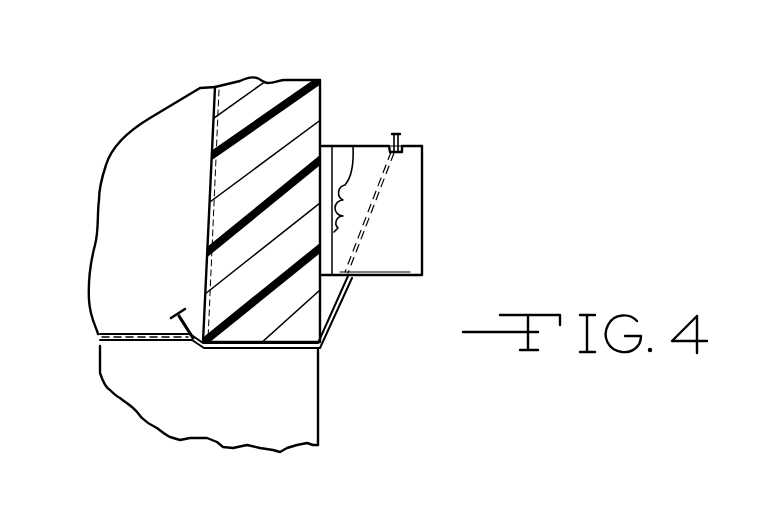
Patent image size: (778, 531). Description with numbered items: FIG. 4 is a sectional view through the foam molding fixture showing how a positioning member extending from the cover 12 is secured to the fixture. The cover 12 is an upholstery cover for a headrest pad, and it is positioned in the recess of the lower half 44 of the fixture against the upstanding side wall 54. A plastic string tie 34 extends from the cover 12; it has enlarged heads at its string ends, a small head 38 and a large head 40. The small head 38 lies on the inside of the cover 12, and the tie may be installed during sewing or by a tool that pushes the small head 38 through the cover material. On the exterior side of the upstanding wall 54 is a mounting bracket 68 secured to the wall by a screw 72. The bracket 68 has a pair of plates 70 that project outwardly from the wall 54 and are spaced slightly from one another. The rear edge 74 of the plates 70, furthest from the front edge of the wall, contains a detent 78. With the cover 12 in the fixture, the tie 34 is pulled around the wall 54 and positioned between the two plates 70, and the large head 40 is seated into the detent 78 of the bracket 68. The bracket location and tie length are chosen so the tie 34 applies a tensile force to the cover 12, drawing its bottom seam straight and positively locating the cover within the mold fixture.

The cover 12 is at (204, 128).
The upstanding side wall 54 is at (272, 97).
The mounting bracket 68 is at (436, 233).
The plate 70 is at (400, 262).
The screw 72 is at (353, 146).
The rear edge 74 is at (375, 141).
The large head 40 is at (400, 138).
The detent 78 is at (403, 150).
The string tie 34 is at (345, 303).
The small head 38 is at (176, 308).
The lower half 44 is at (332, 406).